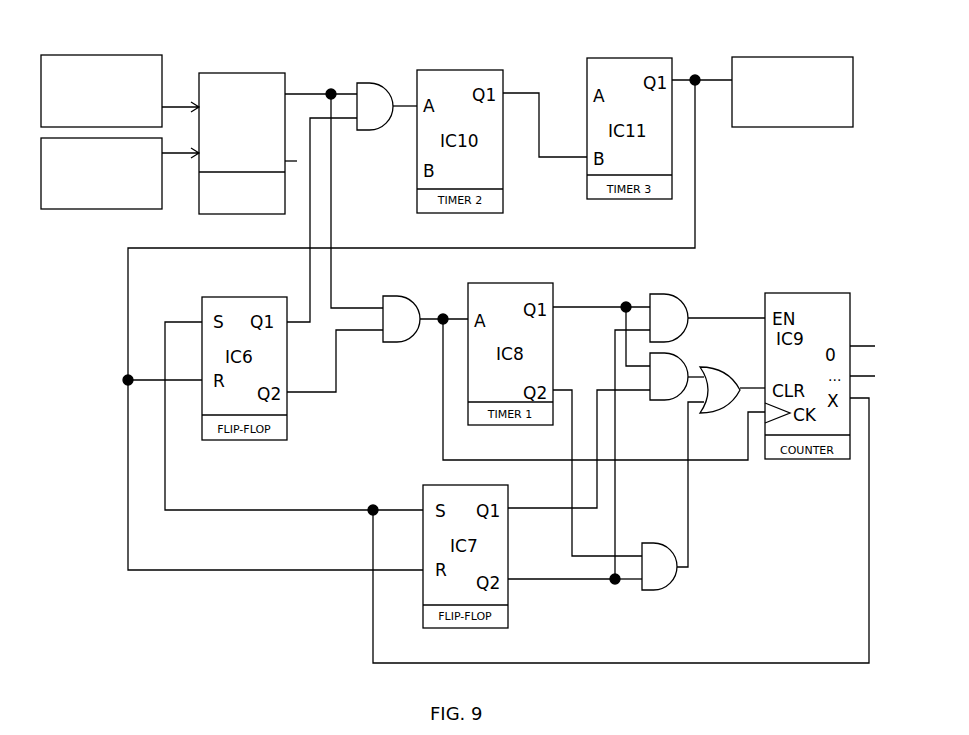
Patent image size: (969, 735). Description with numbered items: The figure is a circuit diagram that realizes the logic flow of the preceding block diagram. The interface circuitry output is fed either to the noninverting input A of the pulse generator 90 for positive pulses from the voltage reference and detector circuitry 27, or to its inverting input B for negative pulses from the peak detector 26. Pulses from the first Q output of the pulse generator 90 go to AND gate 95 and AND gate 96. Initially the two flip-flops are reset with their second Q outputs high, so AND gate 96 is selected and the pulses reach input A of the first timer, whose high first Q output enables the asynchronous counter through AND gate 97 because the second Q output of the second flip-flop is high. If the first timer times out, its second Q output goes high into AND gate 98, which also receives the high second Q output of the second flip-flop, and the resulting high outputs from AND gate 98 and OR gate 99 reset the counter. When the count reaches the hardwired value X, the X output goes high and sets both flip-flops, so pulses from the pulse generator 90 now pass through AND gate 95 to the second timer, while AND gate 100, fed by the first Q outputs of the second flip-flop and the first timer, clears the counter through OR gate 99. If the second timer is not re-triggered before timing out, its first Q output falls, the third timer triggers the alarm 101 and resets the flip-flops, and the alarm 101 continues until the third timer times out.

The voltage reference and detector circuitry 27 is at (142, 68).
The peak detector 26 is at (80, 204).
The pulse generator 90 is at (245, 82).
The AND gate 95 is at (365, 102).
The AND gate 96 is at (400, 308).
The AND gate 97 is at (673, 312).
The AND gate 98 is at (658, 583).
The OR gate 99 is at (733, 395).
The AND gate 100 is at (673, 365).
The alarm 101 is at (825, 110).